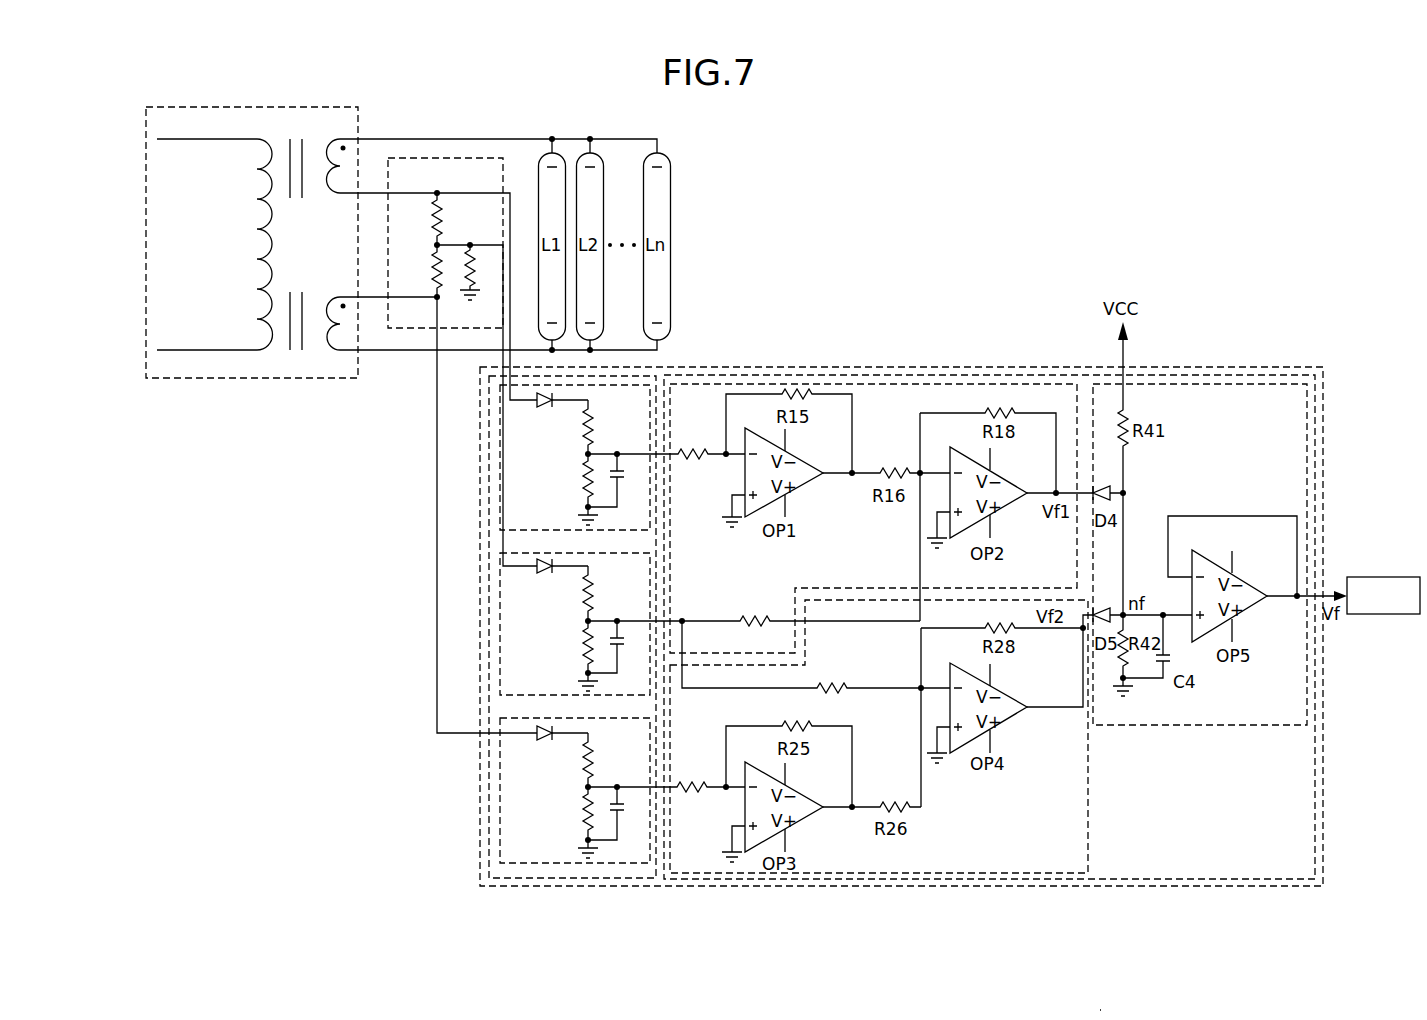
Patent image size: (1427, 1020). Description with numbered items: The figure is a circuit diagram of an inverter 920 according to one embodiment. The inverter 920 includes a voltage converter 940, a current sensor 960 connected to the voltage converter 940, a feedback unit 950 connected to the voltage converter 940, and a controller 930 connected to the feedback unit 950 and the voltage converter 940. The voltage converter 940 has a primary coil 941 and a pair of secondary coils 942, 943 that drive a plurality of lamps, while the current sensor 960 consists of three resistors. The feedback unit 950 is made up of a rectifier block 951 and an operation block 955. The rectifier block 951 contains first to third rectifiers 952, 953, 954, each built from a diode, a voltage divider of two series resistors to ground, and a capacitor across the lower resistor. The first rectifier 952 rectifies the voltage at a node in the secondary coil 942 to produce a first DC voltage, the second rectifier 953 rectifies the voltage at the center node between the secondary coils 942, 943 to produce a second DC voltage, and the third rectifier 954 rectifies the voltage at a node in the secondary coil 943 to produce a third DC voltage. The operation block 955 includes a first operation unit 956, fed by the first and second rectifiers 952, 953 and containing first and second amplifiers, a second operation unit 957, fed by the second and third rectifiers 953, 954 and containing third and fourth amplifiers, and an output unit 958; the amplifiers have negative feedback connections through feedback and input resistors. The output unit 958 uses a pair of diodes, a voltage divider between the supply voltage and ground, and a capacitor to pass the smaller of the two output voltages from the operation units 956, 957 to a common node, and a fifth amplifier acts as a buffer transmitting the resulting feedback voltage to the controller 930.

The inverter 920 is at (884, 126).
The controller 930 is at (1390, 606).
The voltage converter 940 is at (207, 107).
The primary coil 941 is at (257, 139).
The secondary coil 942 is at (340, 139).
The secondary coil 943 is at (340, 350).
The feedback unit 950 is at (967, 367).
The rectifier block 951 is at (489, 856).
The first rectifier 952 is at (489, 457).
The second rectifier 953 is at (500, 622).
The third rectifier 954 is at (500, 800).
The operation block 955 is at (867, 375).
The first operation unit 956 is at (771, 384).
The second operation unit 957 is at (1088, 830).
The output unit 958 is at (1247, 384).
The current sensor 960 is at (445, 158).